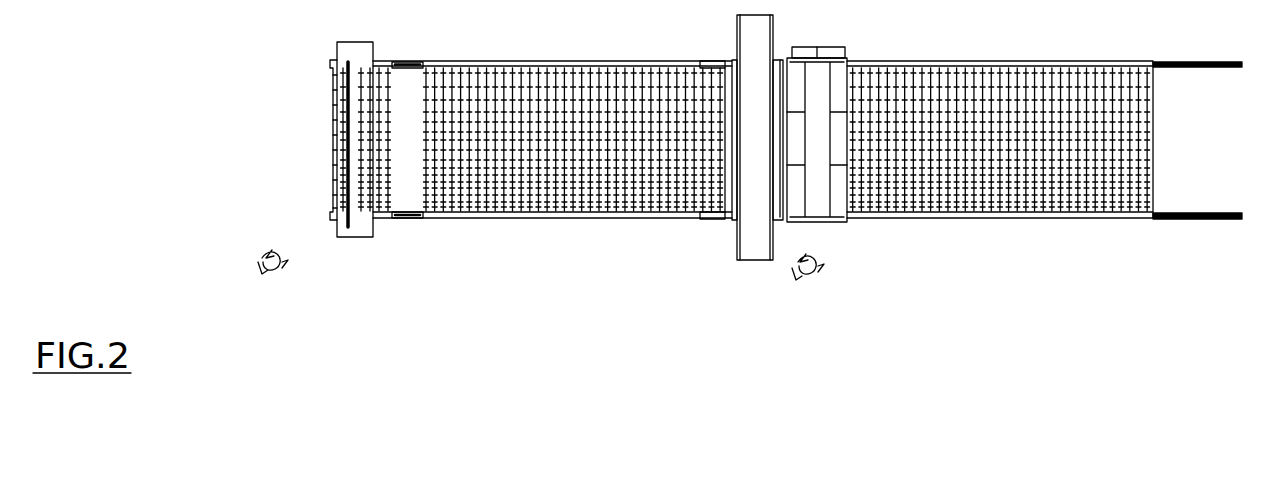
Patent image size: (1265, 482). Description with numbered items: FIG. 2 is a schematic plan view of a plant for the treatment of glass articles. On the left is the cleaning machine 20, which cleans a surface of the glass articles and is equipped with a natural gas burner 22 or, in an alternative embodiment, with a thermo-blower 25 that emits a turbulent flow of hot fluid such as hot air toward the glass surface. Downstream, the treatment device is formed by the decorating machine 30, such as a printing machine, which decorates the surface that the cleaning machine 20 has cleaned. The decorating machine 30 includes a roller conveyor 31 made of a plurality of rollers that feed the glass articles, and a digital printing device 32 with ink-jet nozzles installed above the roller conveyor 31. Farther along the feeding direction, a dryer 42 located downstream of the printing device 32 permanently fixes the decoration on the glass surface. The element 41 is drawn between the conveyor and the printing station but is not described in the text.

The cleaning machine 20 is at (321, 287).
The natural gas burner 22 is at (390, 183).
The thermo-blower 25 is at (552, 215).
The roller conveyor 31 is at (492, 212).
The coupling connector 41 is at (707, 225).
The printing device 32 is at (750, 262).
The dryer 42 is at (812, 223).
The decorating machine 30 is at (762, 297).